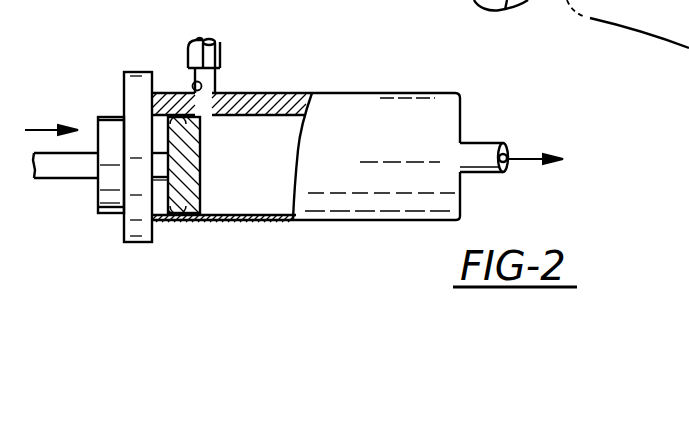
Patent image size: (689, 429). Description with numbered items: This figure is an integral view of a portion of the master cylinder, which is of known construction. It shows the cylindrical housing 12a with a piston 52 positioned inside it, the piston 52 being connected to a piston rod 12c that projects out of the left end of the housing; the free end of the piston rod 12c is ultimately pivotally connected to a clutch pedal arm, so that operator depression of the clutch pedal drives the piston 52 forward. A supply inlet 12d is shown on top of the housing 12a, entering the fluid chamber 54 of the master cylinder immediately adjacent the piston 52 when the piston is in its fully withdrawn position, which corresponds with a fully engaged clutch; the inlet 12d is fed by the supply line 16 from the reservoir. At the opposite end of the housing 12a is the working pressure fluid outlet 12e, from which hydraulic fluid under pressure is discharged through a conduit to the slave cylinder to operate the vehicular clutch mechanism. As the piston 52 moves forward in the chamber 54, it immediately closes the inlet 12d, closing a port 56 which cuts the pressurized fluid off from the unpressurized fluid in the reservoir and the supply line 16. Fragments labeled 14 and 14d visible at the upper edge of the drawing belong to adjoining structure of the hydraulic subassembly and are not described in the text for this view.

The cylindrical housing 12a is at (410, 93).
The piston rod 12c is at (81, 152).
The supply inlet 12d is at (217, 82).
The working pressure fluid outlet 12e is at (485, 143).
The linkage 14 is at (669, 6).
The linkage arm 14d is at (505, 12).
The supply line 16 is at (220, 62).
The piston 52 is at (200, 155).
The fluid chamber 54 is at (276, 215).
The port 56 is at (193, 86).